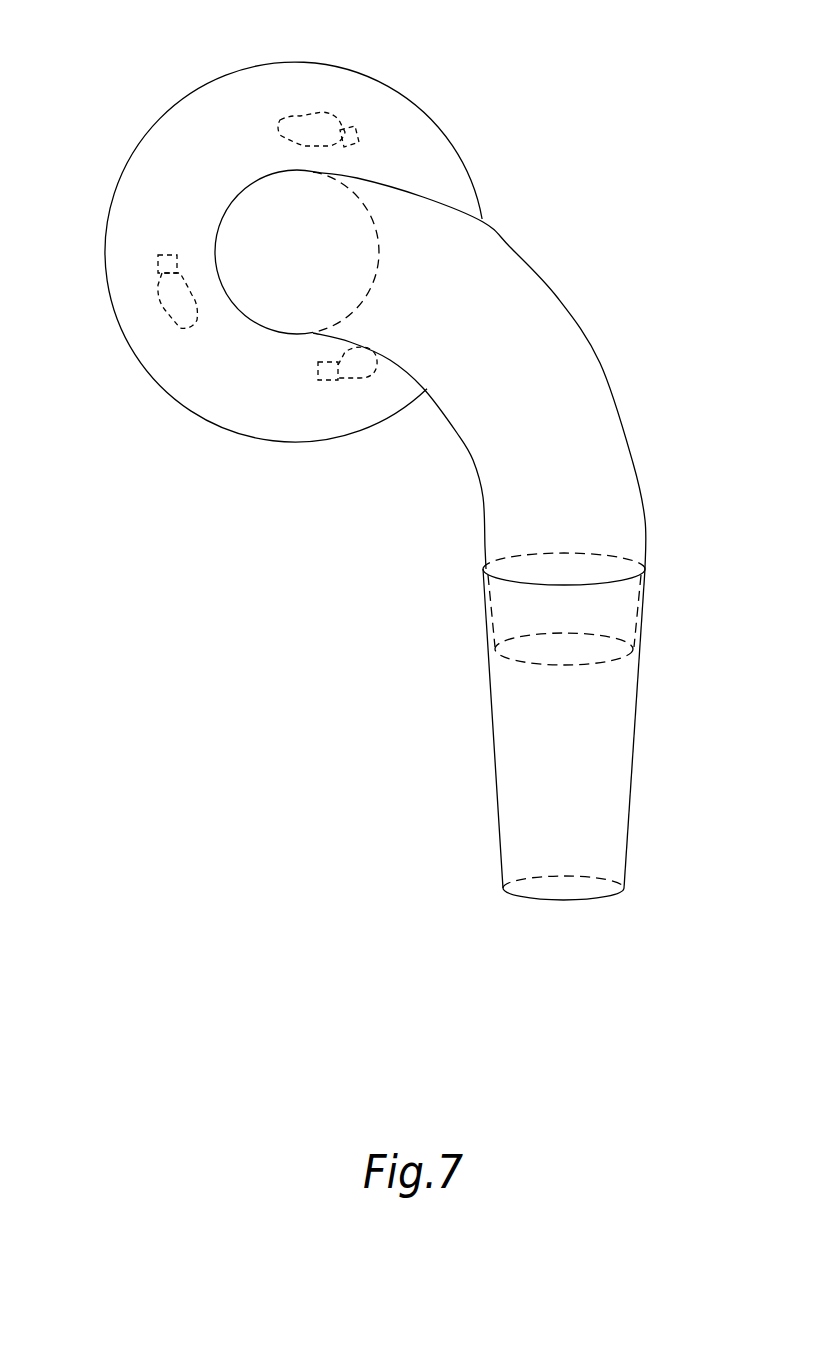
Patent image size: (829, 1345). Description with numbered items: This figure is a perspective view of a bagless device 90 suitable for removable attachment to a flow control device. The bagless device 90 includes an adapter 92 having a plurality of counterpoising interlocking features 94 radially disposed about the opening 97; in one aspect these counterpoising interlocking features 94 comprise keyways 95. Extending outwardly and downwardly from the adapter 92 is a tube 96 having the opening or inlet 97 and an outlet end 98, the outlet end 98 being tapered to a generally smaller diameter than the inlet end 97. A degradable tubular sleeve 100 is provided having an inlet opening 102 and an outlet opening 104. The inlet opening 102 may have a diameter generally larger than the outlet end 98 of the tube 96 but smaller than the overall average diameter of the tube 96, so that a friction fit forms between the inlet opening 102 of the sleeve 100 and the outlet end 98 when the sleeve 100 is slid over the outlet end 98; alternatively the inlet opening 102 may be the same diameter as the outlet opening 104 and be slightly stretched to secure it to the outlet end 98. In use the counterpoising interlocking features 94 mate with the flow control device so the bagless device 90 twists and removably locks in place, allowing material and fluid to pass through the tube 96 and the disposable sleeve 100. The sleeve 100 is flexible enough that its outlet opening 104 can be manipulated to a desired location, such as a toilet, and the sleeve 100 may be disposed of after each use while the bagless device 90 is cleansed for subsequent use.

The bagless device 90 is at (381, 82).
The adapter 92 is at (417, 150).
The counterpoising interlocking feature 94 is at (302, 115).
The keyway 95 is at (310, 142).
The tube 96 is at (555, 303).
The opening or inlet 97 is at (381, 240).
The outlet end 98 is at (602, 660).
The degradable tubular sleeve 100 is at (490, 726).
The inlet opening 102 is at (647, 565).
The outlet opening 104 is at (593, 900).